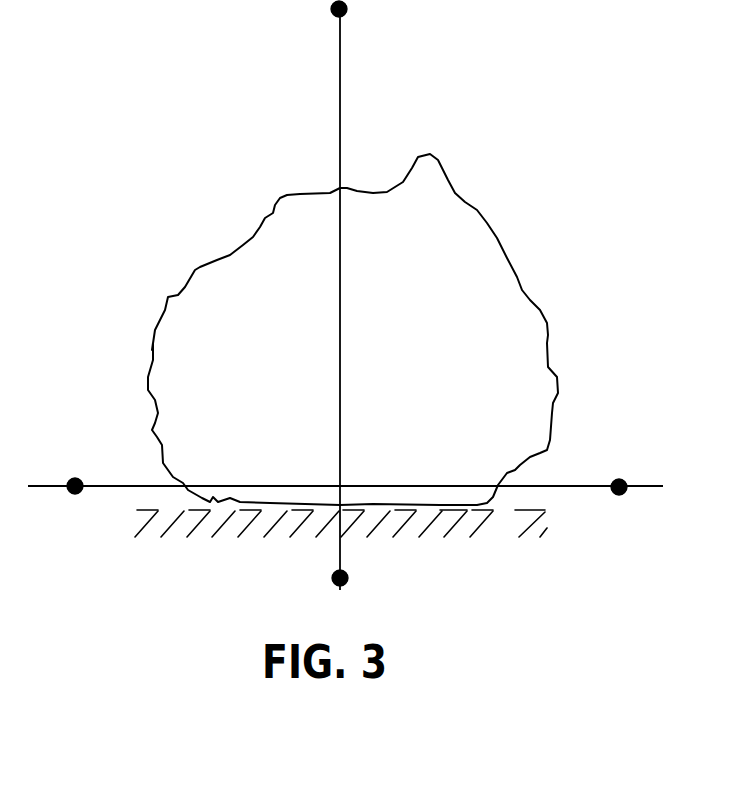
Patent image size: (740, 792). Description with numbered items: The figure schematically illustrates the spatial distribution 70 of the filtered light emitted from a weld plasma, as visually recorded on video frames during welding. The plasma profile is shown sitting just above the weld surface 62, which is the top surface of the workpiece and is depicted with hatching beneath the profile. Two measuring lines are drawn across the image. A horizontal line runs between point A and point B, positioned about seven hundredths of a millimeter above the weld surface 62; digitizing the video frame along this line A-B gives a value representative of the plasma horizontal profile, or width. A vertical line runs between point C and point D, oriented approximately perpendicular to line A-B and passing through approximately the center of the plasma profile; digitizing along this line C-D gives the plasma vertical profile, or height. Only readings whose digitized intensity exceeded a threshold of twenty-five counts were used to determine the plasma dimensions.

The spatial distribution 70 is at (548, 335).
The weld surface 62 is at (492, 537).
The point A is at (74, 500).
The point B is at (619, 501).
The point C is at (350, 578).
The point D is at (352, 11).